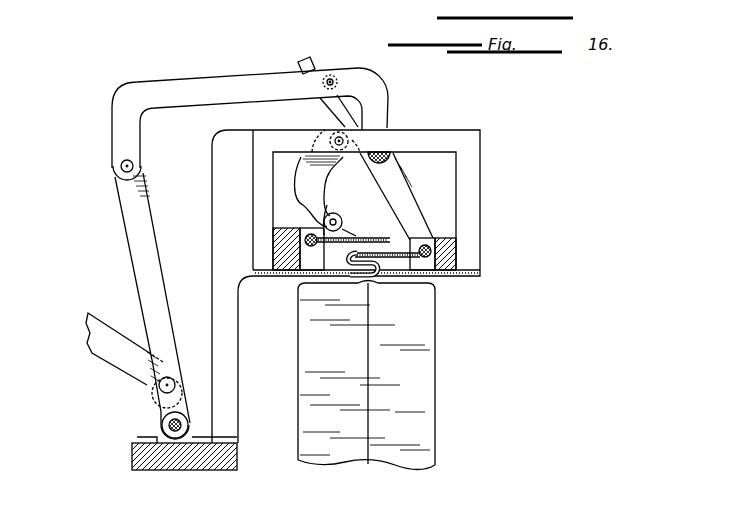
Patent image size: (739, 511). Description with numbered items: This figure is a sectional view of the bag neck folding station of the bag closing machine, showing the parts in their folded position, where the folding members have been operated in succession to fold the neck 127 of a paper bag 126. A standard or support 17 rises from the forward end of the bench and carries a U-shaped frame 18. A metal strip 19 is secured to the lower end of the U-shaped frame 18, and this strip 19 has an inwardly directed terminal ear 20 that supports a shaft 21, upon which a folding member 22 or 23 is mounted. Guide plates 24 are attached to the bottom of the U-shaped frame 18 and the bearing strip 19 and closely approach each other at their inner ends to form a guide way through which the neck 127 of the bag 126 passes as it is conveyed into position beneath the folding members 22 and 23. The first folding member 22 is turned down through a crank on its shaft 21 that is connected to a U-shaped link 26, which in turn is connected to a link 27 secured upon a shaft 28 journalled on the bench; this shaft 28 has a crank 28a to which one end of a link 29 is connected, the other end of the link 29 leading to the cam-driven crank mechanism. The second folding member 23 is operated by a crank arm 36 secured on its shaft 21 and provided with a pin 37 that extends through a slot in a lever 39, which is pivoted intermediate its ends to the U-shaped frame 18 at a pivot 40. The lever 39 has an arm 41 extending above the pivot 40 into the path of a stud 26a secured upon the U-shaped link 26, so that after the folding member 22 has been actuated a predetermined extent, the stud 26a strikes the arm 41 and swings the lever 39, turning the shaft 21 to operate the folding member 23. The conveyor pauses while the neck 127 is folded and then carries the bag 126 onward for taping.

The standards or supports 17 is at (218, 263).
The U-shaped frame 18 is at (420, 138).
The metal strip 19 is at (290, 258).
The terminal ear 20 is at (313, 262).
The shaft 21 is at (311, 234).
The folding member 22 is at (396, 248).
The folding member 23 is at (347, 232).
The guide plate 24 is at (262, 277).
The U-shaped link 26 is at (225, 88).
The stud 26a is at (334, 78).
The link 27 is at (145, 277).
The shaft 28 is at (167, 427).
The crank 28a is at (158, 405).
The link 29 is at (108, 350).
The crank arm 36 is at (326, 230).
The pin 37 is at (338, 210).
The lever 39 is at (312, 163).
The pivot 40 is at (344, 136).
The arm 41 is at (307, 57).
The paper bag 126 is at (422, 411).
The neck 127 is at (373, 277).